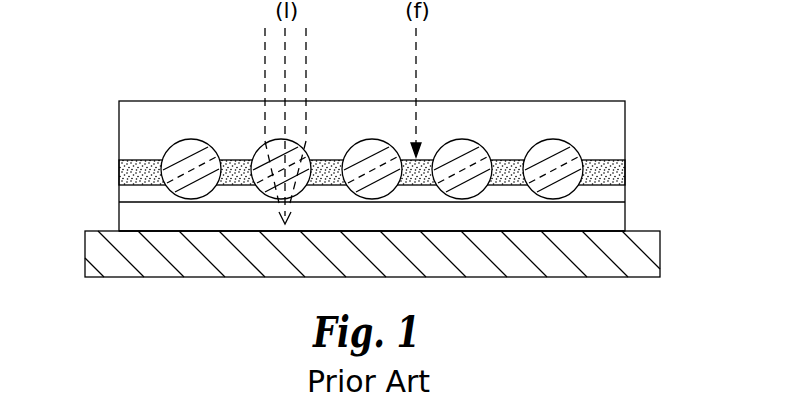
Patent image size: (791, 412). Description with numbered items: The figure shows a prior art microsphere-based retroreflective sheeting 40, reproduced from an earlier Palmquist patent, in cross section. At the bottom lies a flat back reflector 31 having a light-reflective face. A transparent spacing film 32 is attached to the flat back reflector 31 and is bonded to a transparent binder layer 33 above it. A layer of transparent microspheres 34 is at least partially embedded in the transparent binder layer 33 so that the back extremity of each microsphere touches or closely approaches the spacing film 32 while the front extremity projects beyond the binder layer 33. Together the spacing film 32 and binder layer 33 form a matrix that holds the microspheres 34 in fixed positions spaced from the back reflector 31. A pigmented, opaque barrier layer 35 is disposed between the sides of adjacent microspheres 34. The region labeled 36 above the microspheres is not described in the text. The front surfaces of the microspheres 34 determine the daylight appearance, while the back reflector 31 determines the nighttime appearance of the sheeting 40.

The microsphere-based retroreflective sheeting 40 is at (126, 66).
The encapsulating resin / cover layer 36 is at (617, 122).
The pigmented, opaque barrier layer 35 is at (619, 173).
The transparent microspheres 34 is at (561, 148).
The transparent binder layer 33 is at (617, 196).
The transparent spacing film 32 is at (617, 219).
The flat back reflector 31 is at (650, 253).